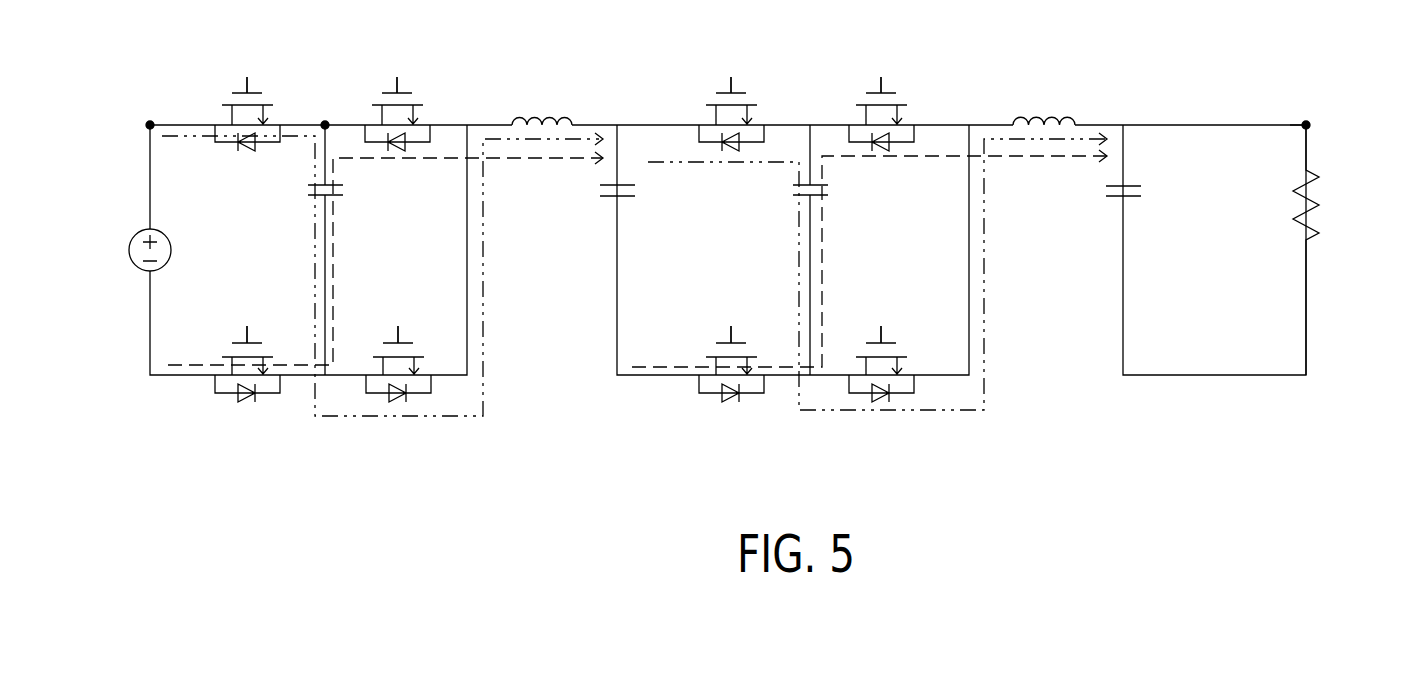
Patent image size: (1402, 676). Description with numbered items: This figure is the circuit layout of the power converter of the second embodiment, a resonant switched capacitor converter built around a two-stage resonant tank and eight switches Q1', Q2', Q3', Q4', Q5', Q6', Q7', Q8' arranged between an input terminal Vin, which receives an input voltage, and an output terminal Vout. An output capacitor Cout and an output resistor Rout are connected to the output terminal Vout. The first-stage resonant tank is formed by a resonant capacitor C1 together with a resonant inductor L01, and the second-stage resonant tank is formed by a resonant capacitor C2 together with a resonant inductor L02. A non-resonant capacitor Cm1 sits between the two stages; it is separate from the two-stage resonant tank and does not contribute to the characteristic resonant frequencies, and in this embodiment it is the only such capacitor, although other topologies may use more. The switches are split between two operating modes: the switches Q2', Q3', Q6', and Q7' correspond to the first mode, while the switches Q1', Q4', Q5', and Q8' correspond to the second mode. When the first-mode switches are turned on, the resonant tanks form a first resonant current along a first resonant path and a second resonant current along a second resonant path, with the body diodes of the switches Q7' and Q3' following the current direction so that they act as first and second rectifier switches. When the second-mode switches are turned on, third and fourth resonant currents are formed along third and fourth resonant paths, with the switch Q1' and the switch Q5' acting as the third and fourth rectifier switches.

The input terminal Vin is at (125, 190).
The output terminal Vout is at (1340, 124).
The switch Q1' is at (261, 362).
The switch Q2' is at (262, 109).
The switch Q3' is at (413, 362).
The switch Q4' is at (412, 109).
The switch Q5' is at (745, 362).
The switch Q6' is at (747, 109).
The switch Q7' is at (896, 362).
The switch Q8' is at (896, 109).
The resonant capacitor C1 is at (345, 250).
The resonant capacitor C2 is at (830, 250).
The non-resonant capacitor Cm1 is at (589, 189).
The output capacitor Cout is at (1158, 189).
The output resistor Rout is at (1341, 250).
The resonant inductor L01 is at (542, 102).
The resonant inductor L02 is at (1045, 102).